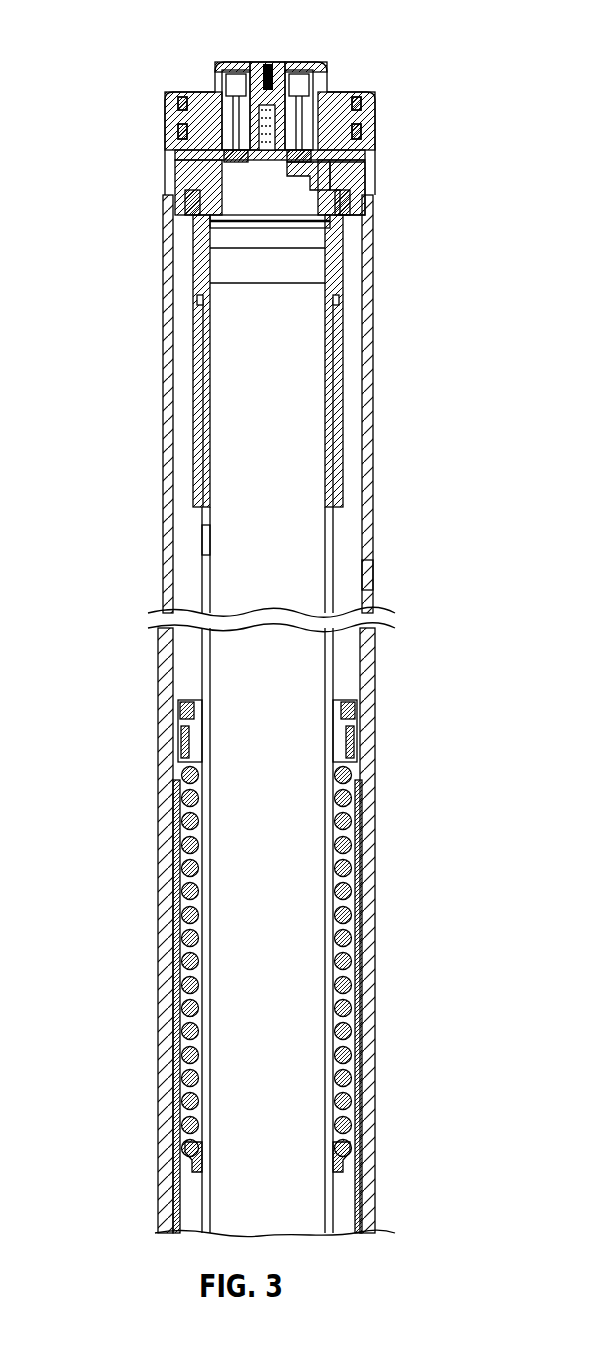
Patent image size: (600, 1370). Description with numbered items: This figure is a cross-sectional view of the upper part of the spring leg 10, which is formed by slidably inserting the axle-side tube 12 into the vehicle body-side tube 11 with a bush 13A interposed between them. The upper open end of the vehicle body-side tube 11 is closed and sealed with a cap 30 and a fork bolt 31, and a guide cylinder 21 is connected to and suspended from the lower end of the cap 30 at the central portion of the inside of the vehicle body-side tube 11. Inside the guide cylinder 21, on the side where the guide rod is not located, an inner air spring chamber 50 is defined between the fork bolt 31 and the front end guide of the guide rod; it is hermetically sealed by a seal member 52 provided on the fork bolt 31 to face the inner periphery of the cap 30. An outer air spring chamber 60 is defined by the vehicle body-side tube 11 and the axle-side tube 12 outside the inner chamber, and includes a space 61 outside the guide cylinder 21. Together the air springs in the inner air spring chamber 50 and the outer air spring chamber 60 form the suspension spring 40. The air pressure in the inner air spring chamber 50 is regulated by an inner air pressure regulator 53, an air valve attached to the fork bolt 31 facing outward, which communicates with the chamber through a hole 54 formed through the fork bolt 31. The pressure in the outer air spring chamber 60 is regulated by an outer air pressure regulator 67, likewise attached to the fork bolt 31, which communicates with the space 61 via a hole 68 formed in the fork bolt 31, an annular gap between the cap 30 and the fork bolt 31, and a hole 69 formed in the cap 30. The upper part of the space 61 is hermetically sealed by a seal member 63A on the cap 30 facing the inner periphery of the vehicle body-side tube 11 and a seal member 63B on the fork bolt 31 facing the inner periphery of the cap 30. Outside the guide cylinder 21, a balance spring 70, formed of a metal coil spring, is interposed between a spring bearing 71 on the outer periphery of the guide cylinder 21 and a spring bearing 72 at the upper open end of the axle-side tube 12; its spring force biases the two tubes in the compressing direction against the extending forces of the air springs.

The spring leg 10 is at (128, 83).
The vehicle body-side tube 11 is at (163, 418).
The axle-side tube 12 is at (173, 1202).
The bush 13A is at (176, 826).
The guide cylinder 21 is at (202, 541).
The cap 30 is at (165, 103).
The fork bolt 31 is at (185, 175).
The suspension spring 40 is at (300, 460).
The inner air spring chamber 50 is at (305, 481).
The seal member 52 is at (215, 222).
The inner air pressure regulator 53 is at (222, 82).
The hole 54 is at (200, 196).
The outer air spring chamber 60 is at (348, 543).
The space 61 is at (348, 574).
The seal member 63A is at (362, 134).
The seal member 63B is at (362, 104).
The outer air pressure regulator 67 is at (322, 86).
The hole 68 is at (345, 165).
The hole 69 is at (355, 192).
The balance spring 70 is at (352, 895).
The spring bearing 71 is at (340, 1157).
The spring bearing 72 is at (355, 745).